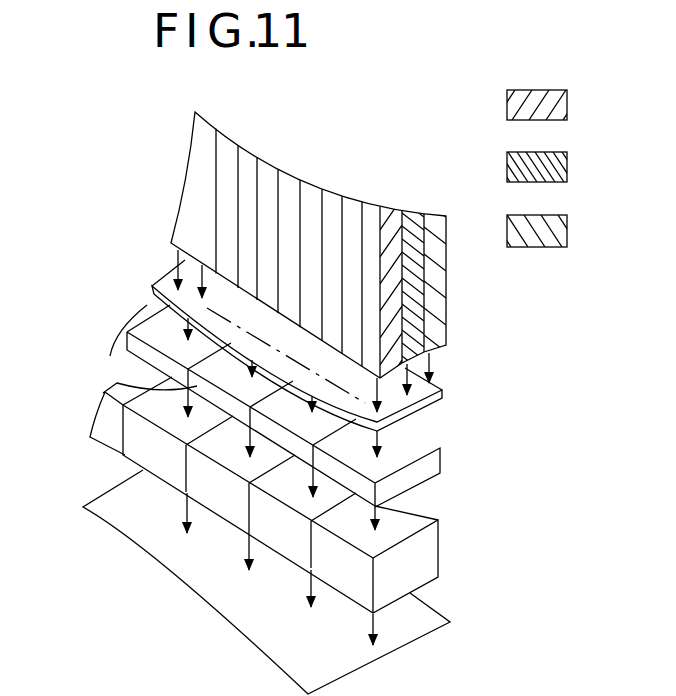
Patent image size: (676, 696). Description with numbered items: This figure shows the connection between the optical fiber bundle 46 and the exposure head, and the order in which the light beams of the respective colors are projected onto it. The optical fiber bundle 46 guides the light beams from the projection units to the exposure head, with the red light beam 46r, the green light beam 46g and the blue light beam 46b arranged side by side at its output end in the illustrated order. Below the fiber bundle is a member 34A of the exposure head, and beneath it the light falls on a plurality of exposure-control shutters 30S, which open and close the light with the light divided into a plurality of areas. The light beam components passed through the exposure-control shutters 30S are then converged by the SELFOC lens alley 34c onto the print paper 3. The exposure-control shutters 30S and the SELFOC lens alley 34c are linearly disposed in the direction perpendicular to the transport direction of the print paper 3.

The print paper 3 is at (425, 637).
The exposure-control shutters 30S is at (140, 355).
The elongated lens / light guide bar 34A is at (443, 397).
The SELFOC lens alley 34c is at (203, 483).
The optical fiber bundle 46 is at (449, 296).
The red light beam 46r is at (393, 211).
The green light beam 46g is at (413, 212).
The blue light beam 46b is at (436, 222).